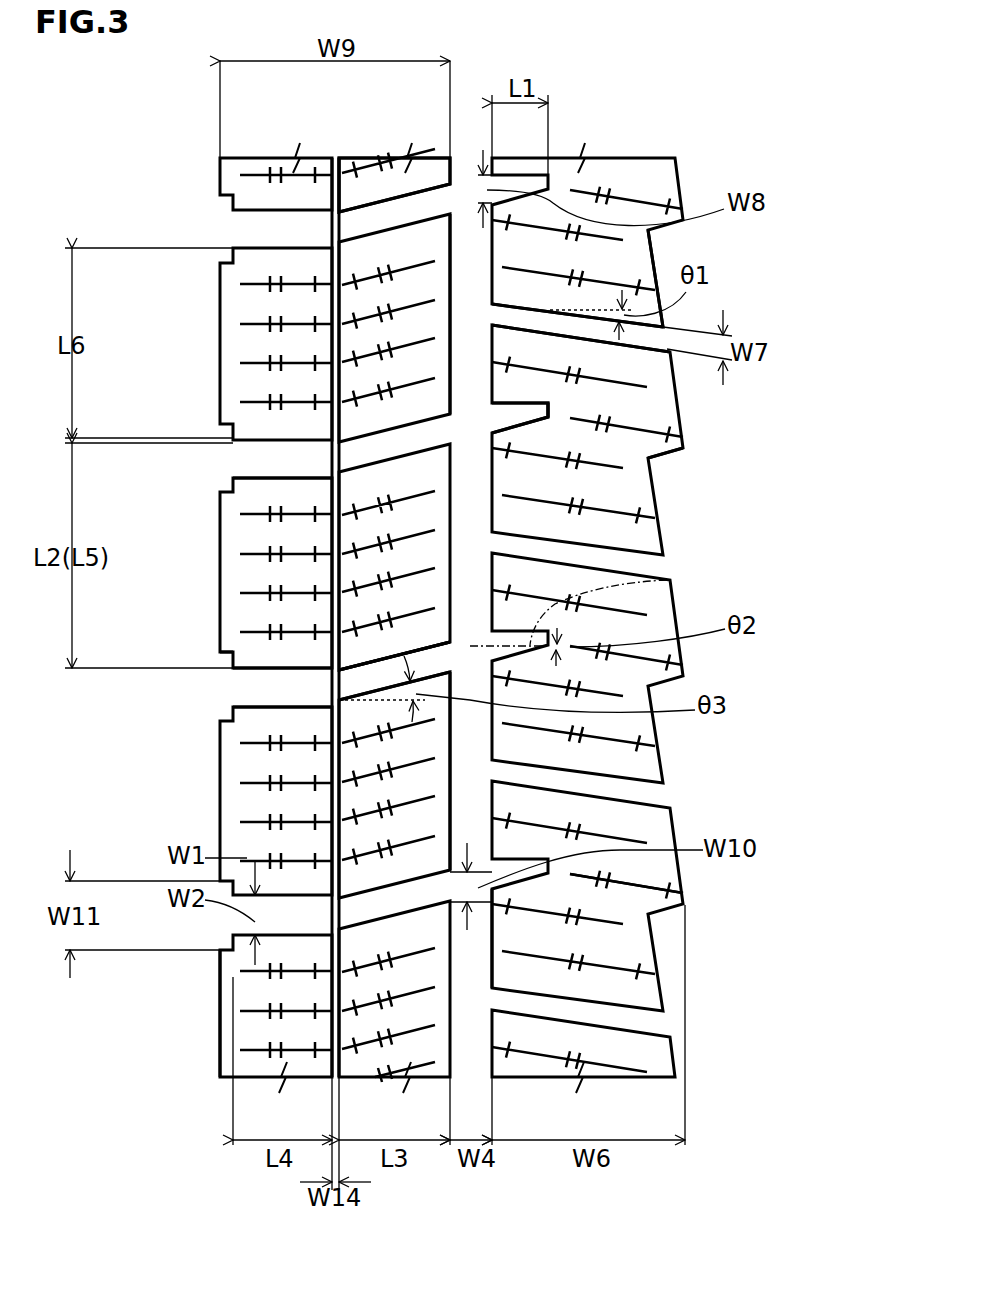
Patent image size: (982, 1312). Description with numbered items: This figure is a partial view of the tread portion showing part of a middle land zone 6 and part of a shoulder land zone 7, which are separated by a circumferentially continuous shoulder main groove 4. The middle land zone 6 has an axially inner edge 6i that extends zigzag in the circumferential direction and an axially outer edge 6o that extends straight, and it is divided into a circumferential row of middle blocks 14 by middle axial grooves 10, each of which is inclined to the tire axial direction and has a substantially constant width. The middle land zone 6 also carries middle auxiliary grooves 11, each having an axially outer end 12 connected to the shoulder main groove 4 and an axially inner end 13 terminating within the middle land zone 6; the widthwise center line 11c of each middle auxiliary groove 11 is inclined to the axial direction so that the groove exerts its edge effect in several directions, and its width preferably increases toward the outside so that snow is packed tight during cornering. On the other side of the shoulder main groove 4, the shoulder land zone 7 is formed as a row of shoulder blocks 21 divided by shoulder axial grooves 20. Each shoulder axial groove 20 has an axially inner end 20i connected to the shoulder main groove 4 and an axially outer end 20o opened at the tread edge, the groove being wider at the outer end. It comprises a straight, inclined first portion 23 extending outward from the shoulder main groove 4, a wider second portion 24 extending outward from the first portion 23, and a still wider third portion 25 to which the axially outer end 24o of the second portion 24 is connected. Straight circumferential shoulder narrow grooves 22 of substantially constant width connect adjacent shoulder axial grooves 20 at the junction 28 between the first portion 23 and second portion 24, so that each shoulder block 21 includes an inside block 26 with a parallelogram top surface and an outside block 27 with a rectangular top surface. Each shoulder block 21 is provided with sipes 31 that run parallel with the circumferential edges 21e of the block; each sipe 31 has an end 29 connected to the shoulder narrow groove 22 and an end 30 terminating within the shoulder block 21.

The shoulder main groove 4 is at (467, 230).
The middle land zone 6 is at (617, 186).
The axially inner edge 6i is at (655, 256).
The axially outer edge 6o is at (484, 940).
The shoulder land zone 7 is at (350, 195).
The middle axial groove 10 is at (553, 323).
The middle auxiliary groove 11 is at (490, 419).
The widthwise center line 11c is at (668, 581).
The axially outer end 12 is at (513, 408).
The axially inner end 13 is at (684, 450).
The middle block 14 is at (603, 903).
The shoulder axial groove 20 is at (357, 224).
The axially inner end 20i is at (447, 887).
The axially outer end 20o is at (222, 927).
The shoulder block 21 is at (136, 255).
The edge of the shoulder block 21e is at (297, 478).
The shoulder narrow groove 22 is at (335, 268).
The first portion 23 is at (368, 690).
The second portion 24 is at (288, 693).
The axially outer end 24o is at (233, 688).
The third portion 25 is at (222, 702).
The inside block 26 is at (368, 375).
The outside block 27 is at (262, 305).
The junction 28 is at (382, 676).
The end 29 is at (328, 973).
The end 30 is at (328, 924).
The sipe 31 is at (297, 636).